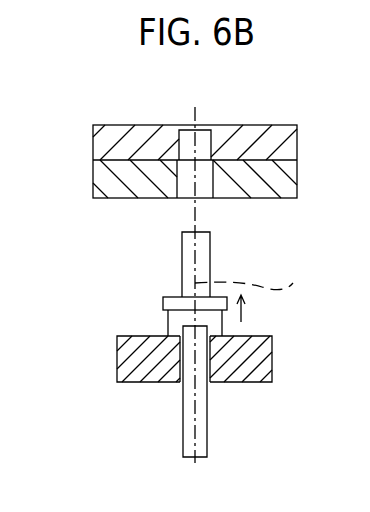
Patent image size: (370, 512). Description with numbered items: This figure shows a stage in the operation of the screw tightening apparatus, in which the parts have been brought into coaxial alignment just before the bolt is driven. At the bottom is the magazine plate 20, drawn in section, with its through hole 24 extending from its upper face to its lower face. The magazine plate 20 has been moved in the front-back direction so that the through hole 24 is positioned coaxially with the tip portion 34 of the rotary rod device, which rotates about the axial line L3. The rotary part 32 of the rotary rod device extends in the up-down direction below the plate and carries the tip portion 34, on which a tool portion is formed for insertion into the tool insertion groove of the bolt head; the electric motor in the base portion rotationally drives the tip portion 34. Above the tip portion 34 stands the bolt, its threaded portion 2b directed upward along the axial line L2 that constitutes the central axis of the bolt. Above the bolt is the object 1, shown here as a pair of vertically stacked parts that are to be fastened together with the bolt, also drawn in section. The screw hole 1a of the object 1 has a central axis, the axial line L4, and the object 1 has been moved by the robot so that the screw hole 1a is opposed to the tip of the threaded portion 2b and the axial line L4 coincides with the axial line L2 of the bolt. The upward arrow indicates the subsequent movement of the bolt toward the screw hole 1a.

The object 1 is at (93, 172).
The screw hole 1a is at (212, 152).
The threaded portion 2b is at (210, 248).
The magazine plate 20 is at (117, 360).
The through hole 24 is at (208, 363).
The rotary part 32 is at (208, 419).
The tip portion 34 is at (172, 336).
The axial line L2 is at (258, 287).
The axial line L3 is at (194, 362).
The axial line L4 is at (195, 150).